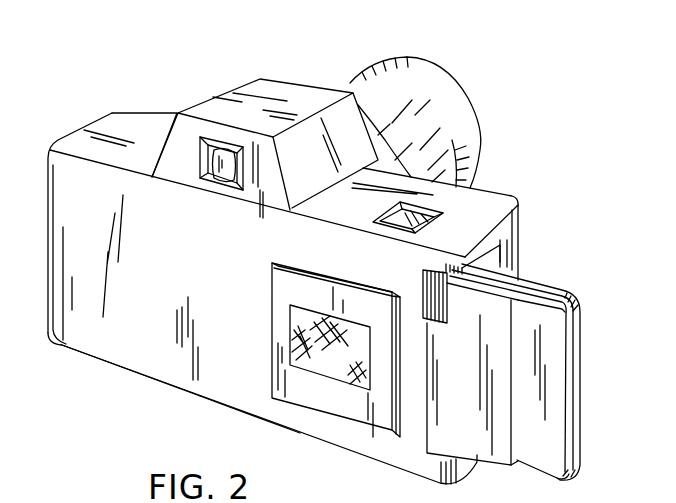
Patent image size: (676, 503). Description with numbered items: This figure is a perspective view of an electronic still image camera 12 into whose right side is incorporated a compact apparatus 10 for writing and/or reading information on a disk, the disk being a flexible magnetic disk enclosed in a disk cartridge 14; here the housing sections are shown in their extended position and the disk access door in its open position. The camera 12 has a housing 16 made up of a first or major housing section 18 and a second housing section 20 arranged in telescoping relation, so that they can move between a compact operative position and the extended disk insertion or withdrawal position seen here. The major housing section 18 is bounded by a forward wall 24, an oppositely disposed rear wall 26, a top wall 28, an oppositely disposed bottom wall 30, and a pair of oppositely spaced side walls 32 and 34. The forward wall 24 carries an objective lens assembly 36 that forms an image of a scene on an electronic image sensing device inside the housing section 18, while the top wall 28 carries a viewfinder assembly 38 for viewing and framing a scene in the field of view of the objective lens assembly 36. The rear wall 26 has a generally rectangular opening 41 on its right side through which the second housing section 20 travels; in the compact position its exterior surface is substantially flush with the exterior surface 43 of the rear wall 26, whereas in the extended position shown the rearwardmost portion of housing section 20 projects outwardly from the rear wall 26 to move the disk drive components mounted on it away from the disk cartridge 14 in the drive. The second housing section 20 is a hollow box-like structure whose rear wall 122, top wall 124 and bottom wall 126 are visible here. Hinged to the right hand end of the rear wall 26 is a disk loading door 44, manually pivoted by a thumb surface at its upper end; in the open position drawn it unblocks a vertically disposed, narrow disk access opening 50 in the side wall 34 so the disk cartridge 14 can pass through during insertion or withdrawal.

The compact apparatus 10 is at (484, 180).
The electronic still image camera 12 is at (176, 64).
The disk cartridge 14 is at (573, 295).
The housing 16 is at (38, 152).
The major housing section 18 is at (518, 202).
The second housing section 20 is at (275, 360).
The forward wall 24 is at (130, 115).
The rear wall 26 is at (110, 353).
The top wall 28 is at (98, 127).
The bottom wall 30 is at (214, 393).
The side wall 32 is at (50, 240).
The side wall 34 is at (520, 232).
The objective lens assembly 36 is at (430, 78).
The viewfinder assembly 38 is at (250, 86).
The rectangular opening 41 is at (282, 260).
The exterior surface 43 is at (201, 278).
The disk loading door 44 is at (500, 457).
The disk access opening 50 is at (494, 267).
The rear wall 122 is at (372, 434).
The top wall 124 is at (340, 277).
The bottom wall 126 is at (398, 430).